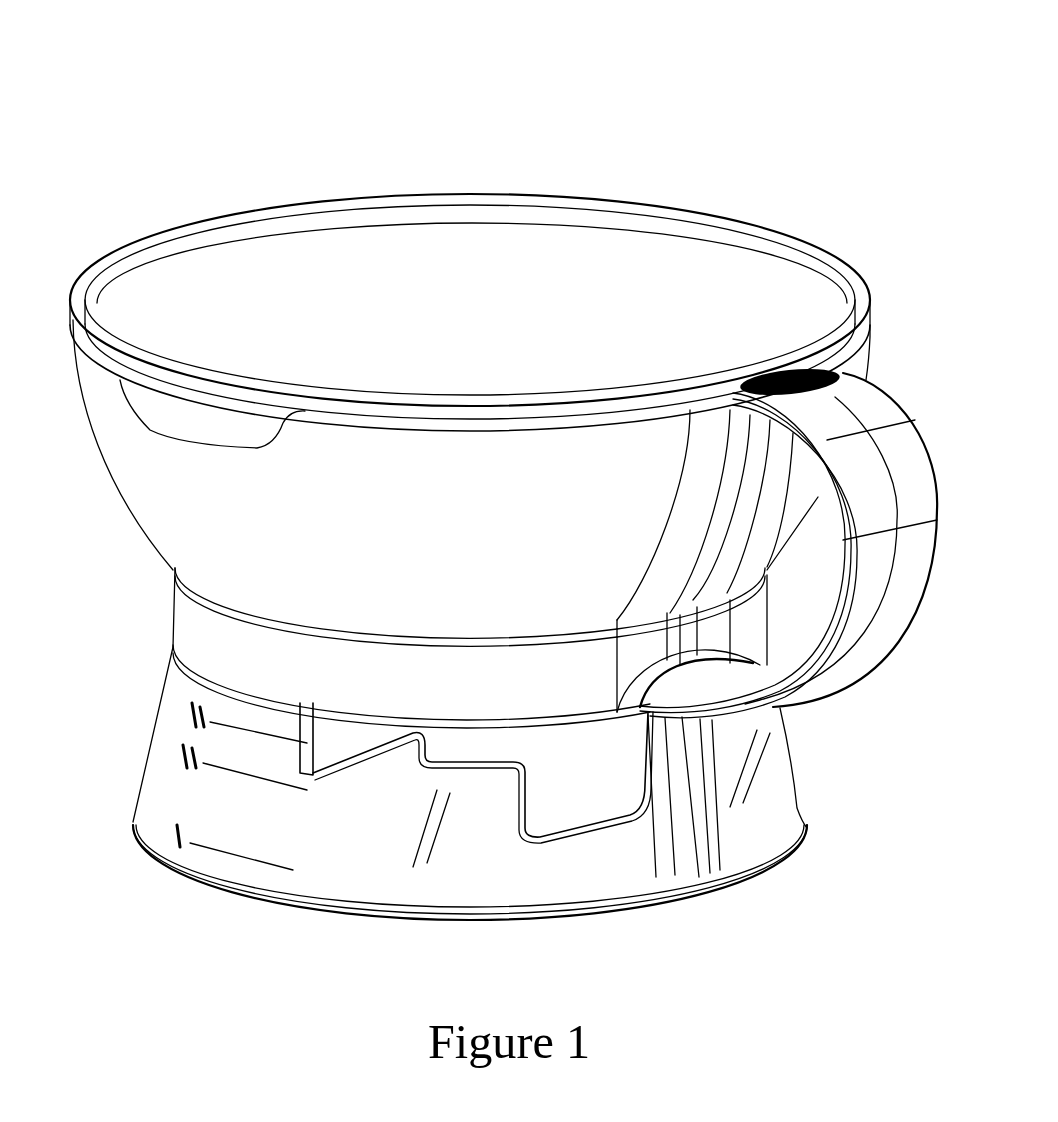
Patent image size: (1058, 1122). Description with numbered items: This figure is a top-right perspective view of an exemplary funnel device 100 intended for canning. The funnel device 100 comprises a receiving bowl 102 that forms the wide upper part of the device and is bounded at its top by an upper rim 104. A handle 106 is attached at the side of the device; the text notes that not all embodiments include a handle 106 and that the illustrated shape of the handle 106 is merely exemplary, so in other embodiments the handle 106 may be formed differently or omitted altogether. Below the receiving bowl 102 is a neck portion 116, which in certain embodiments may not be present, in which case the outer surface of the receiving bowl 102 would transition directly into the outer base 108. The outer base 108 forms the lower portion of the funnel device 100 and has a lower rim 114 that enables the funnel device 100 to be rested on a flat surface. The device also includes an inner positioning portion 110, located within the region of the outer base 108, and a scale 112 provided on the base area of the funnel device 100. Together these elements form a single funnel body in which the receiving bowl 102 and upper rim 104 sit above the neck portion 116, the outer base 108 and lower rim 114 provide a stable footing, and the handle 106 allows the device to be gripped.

The funnel device 100 is at (358, 104).
The receiving bowl 102 is at (633, 287).
The upper rim 104 is at (820, 247).
The handle 106 is at (863, 405).
The outer base 108 is at (768, 808).
The inner positioning portion 110 is at (571, 787).
The scale 112 is at (347, 848).
The lower rim 114 is at (667, 897).
The neck portion 116 is at (225, 648).